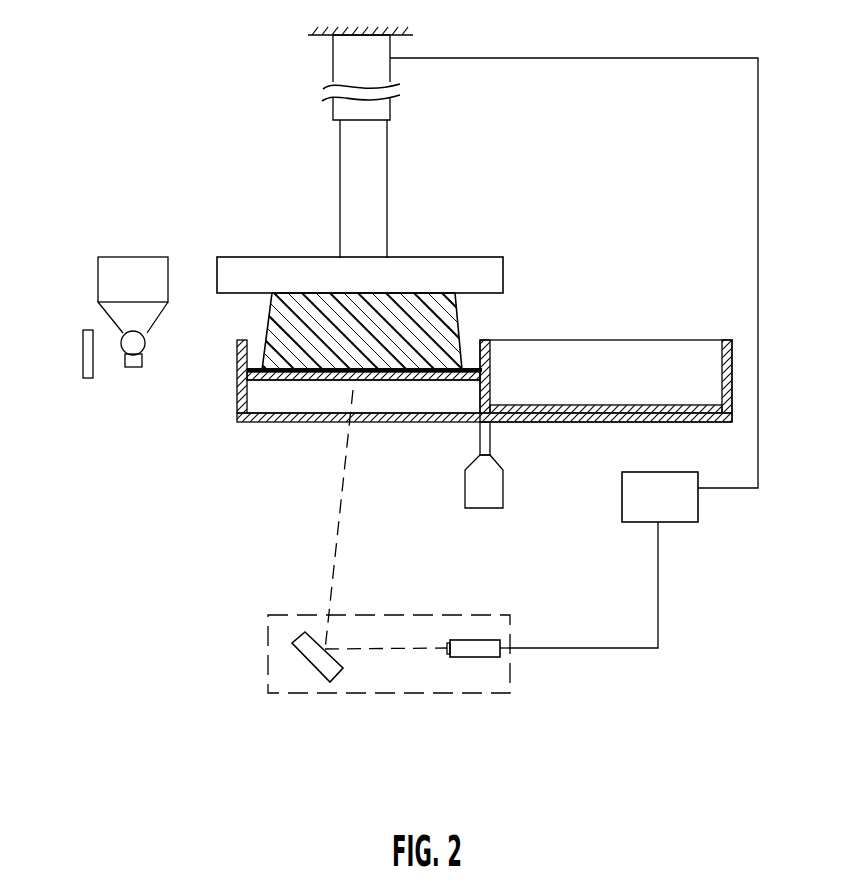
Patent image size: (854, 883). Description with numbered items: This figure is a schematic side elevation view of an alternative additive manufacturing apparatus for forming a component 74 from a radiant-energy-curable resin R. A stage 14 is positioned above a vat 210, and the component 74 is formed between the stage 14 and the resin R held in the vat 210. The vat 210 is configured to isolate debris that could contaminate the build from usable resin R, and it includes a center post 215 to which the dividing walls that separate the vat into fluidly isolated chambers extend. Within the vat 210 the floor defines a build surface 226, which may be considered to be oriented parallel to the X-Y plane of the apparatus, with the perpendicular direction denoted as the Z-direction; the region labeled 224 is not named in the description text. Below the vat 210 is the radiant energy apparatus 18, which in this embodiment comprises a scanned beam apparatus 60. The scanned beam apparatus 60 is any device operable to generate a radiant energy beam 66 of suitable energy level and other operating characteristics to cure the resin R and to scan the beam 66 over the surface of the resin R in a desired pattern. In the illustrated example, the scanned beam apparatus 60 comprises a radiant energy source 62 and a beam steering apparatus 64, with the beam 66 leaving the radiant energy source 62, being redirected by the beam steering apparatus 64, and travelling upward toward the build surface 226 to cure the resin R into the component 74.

The stage 14 is at (477, 267).
The component 74 is at (460, 333).
The resin R is at (467, 367).
The vat 210 is at (166, 385).
The center post 215 is at (236, 397).
The build platform 224 is at (262, 392).
The build surface 226 is at (302, 370).
The radiant energy beam 66 is at (338, 543).
The scanned beam apparatus 60 is at (453, 613).
The beam steering apparatus 64 is at (327, 665).
The radiant energy source 62 is at (485, 652).
The radiant energy apparatus 18 is at (308, 732).